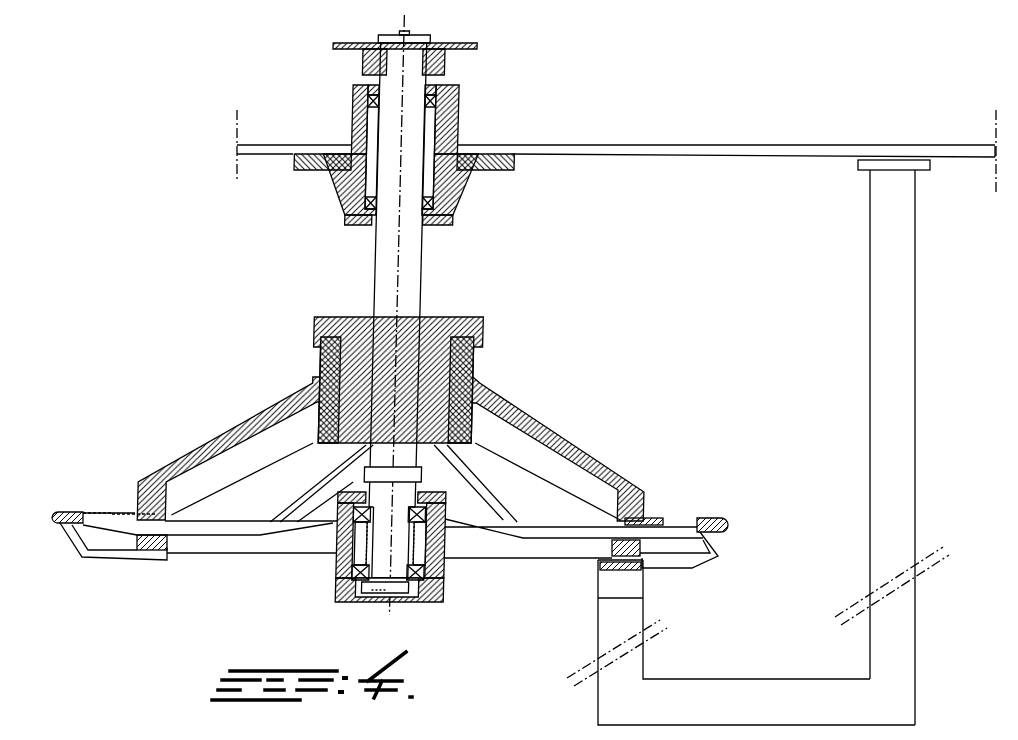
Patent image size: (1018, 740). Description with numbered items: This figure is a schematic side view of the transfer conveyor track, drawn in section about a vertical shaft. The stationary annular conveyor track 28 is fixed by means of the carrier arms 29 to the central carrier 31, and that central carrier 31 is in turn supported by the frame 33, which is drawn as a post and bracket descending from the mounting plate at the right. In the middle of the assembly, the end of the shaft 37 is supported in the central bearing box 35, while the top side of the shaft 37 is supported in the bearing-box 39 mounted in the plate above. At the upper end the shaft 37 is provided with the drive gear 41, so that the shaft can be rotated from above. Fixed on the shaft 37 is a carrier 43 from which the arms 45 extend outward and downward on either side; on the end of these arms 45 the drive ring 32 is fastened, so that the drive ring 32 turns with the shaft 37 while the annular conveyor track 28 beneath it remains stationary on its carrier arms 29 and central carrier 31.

The stationary annular conveyor track 28 is at (720, 520).
The carrier arms 29 is at (707, 550).
The central carrier 31 is at (480, 548).
The drive ring 32 is at (658, 518).
The frame 33 is at (910, 303).
The central bearing box 35 is at (412, 600).
The shaft 37 is at (421, 262).
The bearing-box 39 is at (455, 125).
The drive gear 41 is at (465, 60).
The carrier 43 is at (442, 378).
The arms 45 is at (547, 435).